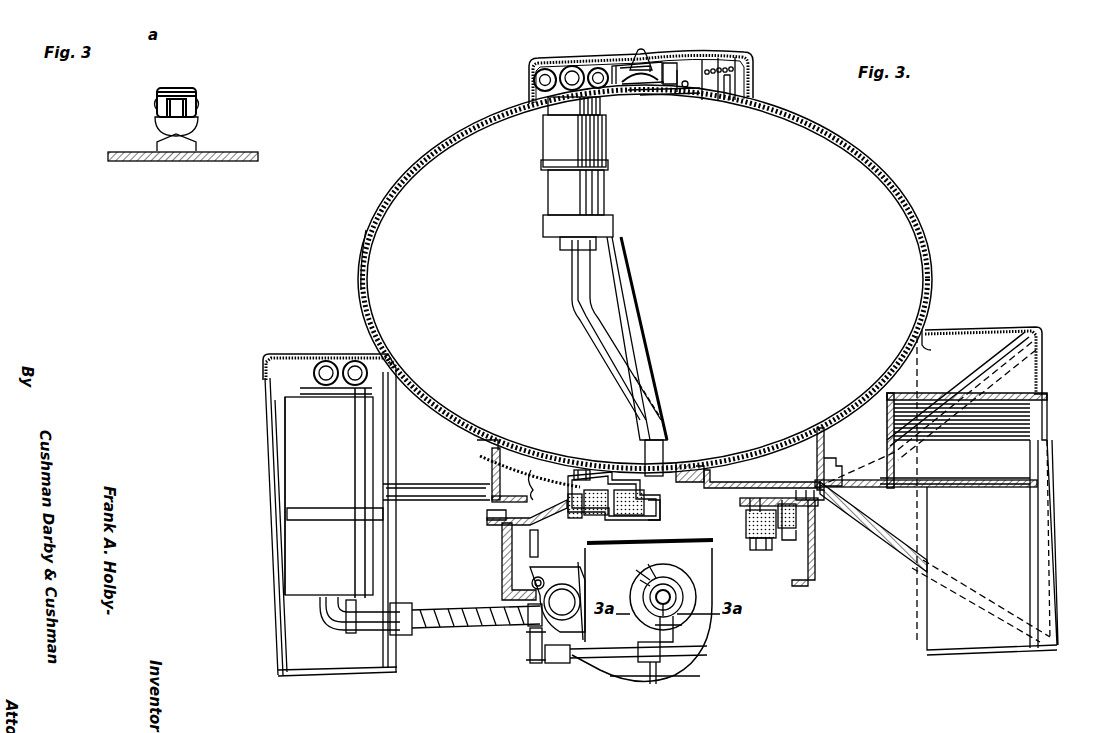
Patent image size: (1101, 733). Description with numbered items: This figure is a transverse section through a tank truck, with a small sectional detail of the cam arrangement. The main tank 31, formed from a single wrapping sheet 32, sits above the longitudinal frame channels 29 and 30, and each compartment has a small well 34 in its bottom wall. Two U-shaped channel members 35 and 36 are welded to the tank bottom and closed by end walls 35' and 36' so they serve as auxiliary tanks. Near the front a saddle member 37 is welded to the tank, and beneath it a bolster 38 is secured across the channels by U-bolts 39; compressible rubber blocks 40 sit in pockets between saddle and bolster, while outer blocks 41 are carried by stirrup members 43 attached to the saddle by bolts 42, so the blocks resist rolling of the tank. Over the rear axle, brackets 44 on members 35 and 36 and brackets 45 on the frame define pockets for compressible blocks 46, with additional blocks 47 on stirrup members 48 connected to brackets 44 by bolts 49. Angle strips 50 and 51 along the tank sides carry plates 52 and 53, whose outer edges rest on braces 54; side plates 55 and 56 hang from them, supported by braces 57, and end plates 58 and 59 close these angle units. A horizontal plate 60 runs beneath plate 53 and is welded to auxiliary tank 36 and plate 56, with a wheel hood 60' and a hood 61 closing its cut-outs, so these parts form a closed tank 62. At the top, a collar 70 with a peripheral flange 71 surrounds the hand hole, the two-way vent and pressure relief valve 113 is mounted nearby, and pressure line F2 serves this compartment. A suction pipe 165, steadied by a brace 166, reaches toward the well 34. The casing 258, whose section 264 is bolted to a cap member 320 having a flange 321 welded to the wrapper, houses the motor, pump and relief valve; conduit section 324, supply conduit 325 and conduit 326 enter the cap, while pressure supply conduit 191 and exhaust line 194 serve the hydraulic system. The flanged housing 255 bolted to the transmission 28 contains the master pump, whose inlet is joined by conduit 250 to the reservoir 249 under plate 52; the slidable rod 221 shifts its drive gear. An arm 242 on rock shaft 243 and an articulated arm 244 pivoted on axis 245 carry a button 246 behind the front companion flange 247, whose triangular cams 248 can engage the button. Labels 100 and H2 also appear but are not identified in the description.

In FIG. 3, the transmission mechanism 28 is at (712, 588).
In FIG. 3, the channel 29 is at (500, 552).
In FIG. 3, the channel 30 is at (818, 572).
In FIG. 3, the main tank 31 is at (850, 140).
In FIG. 3, the wrapping sheet 32 is at (370, 220).
In FIG. 3, the well 34 is at (684, 466).
In FIG. 3, the U-shaped channel member 35 is at (479, 471).
In FIG. 3, the end wall 35' is at (530, 457).
In FIG. 3, the U-shaped channel member 36 is at (801, 448).
In FIG. 3, the end wall 36' is at (762, 453).
In FIG. 3, the saddle member 37 is at (612, 470).
In FIG. 3, the bolster 38 is at (556, 505).
In FIG. 3, the U-bolts 39 is at (490, 530).
In FIG. 3, the compressible rubber blocks 40 is at (660, 510).
In FIG. 3, the blocks 41 is at (572, 518).
In FIG. 3, the bolts 42 is at (584, 468).
In FIG. 3, the stirrup members 43 is at (588, 518).
In FIG. 3, the brackets 44 is at (798, 484).
In FIG. 3, the brackets 45 is at (836, 522).
In FIG. 3, the compressible blocks 46 is at (796, 538).
In FIG. 3, the additional blocks 47 is at (746, 524).
In FIG. 3, the stirrup members 48 is at (758, 550).
In FIG. 3, the bolts 49 is at (738, 502).
In FIG. 3, the angle strip 50 is at (360, 362).
In FIG. 3, the angle strip 51 is at (938, 330).
In FIG. 3, the plate 52 is at (312, 366).
In FIG. 3, the plate 53 is at (996, 326).
In FIG. 3, the braces 54 is at (968, 370).
In FIG. 3, the side plate 55 is at (268, 432).
In FIG. 3, the side plate 56 is at (1040, 376).
In FIG. 3, the braces 57 is at (946, 568).
In FIG. 3, the plate 58 is at (290, 626).
In FIG. 3, the plate 59 is at (1062, 582).
In FIG. 3, the horizontal plate 60 is at (926, 495).
In FIG. 3, the wheel hood 60' is at (967, 429).
In FIG. 3, the hood 61 is at (838, 462).
In FIG. 3, the closed tank 62 is at (1010, 362).
In FIG. 3, the collar 70 is at (704, 66).
In FIG. 3, the peripheral flange 71 is at (690, 92).
In FIG. 3, the lead 100 is at (646, 46).
In FIG. 3, the two-way vent and pressure relief valve 113 is at (650, 58).
In FIG. 3, the suction pipe 165 is at (590, 350).
In FIG. 3, the brace 166 is at (648, 364).
In FIG. 3, the pressure supply conduit 191 is at (356, 448).
In FIG. 3, the exhaust line 194 is at (318, 377).
In FIG. 3, the slidable rod 221 is at (512, 580).
In FIG. 3, the arm 242 is at (532, 642).
In FIG. 3, the rock shaft 243 is at (588, 658).
In FIG. 3A, the articulated arm 244 is at (197, 98).
In FIG. 3, the articulated arm 244 is at (662, 648).
In FIG. 3, the axis 245 is at (668, 668).
In FIG. 3A, the button 246 is at (197, 123).
In FIG. 3, the button 246 is at (658, 632).
In FIG. 3A, the front companion flange 247 is at (200, 168).
In FIG. 3, the front companion flange 247 is at (688, 566).
In FIG. 3A, the triangularly-shaped cams 248 is at (191, 146).
In FIG. 3, the triangularly-shaped cams 248 is at (640, 568).
In FIG. 3, the reservoir 249 is at (292, 472).
In FIG. 3, the conduit 250 is at (338, 630).
In FIG. 3, the flanged housing 255 is at (512, 630).
In FIG. 3, the casing 258 is at (606, 152).
In FIG. 3, the casing section 264 is at (605, 130).
In FIG. 3, the cap member 320 is at (600, 100).
In FIG. 3, the flange 321 is at (528, 94).
In FIG. 3, the conduit section 324 is at (572, 66).
In FIG. 3, the supply conduit 325 is at (600, 68).
In FIG. 3, the conduit 326 is at (536, 74).
In FIG. 3, the pressure line F2 is at (716, 64).
In FIG. 3, the terminal H2 is at (744, 66).